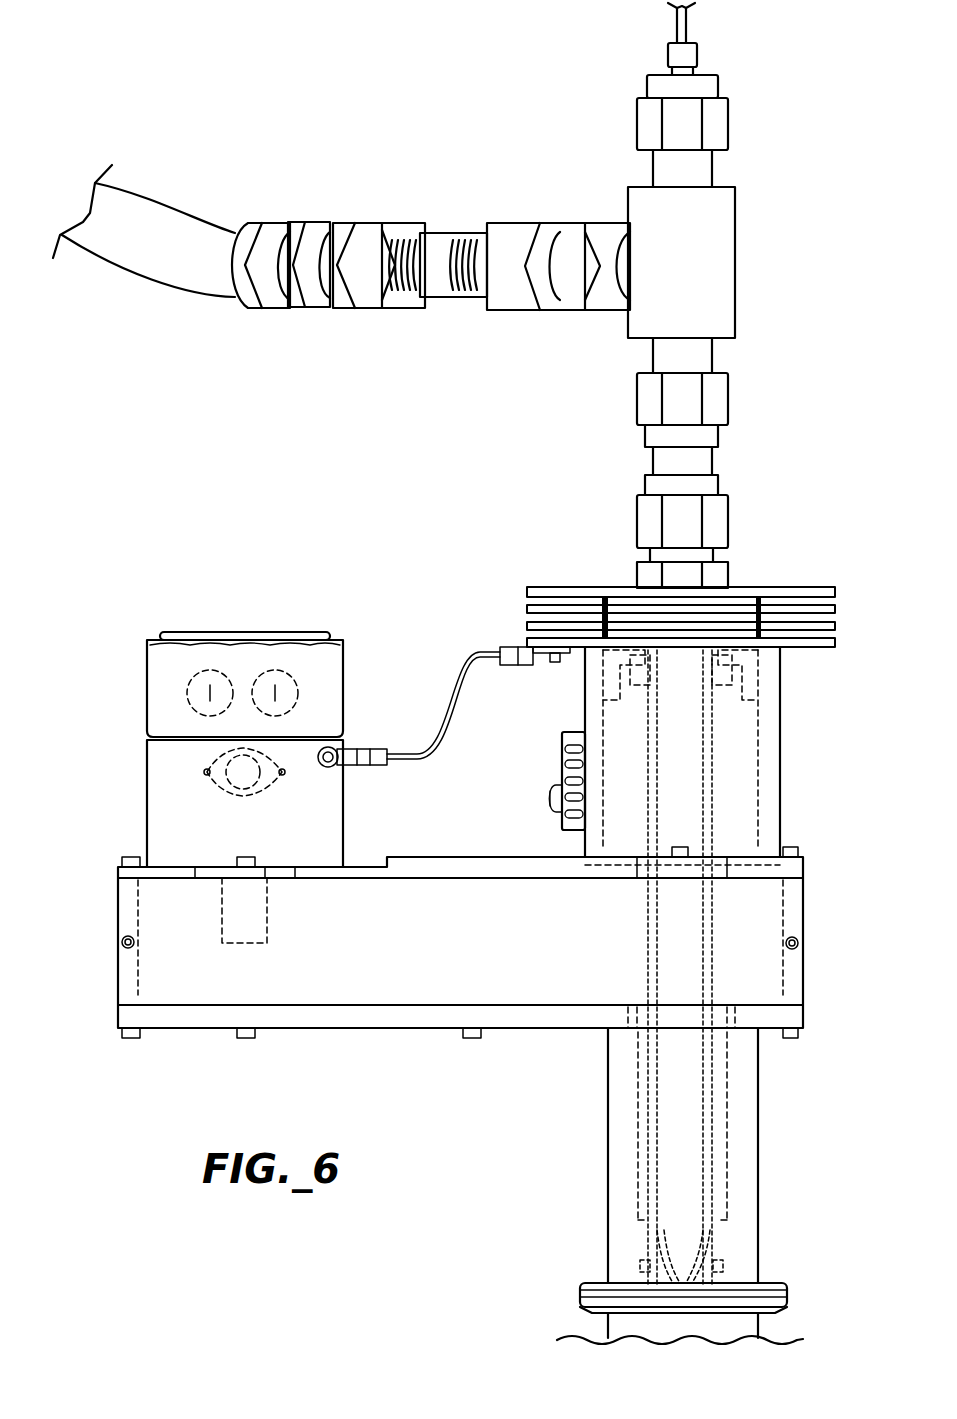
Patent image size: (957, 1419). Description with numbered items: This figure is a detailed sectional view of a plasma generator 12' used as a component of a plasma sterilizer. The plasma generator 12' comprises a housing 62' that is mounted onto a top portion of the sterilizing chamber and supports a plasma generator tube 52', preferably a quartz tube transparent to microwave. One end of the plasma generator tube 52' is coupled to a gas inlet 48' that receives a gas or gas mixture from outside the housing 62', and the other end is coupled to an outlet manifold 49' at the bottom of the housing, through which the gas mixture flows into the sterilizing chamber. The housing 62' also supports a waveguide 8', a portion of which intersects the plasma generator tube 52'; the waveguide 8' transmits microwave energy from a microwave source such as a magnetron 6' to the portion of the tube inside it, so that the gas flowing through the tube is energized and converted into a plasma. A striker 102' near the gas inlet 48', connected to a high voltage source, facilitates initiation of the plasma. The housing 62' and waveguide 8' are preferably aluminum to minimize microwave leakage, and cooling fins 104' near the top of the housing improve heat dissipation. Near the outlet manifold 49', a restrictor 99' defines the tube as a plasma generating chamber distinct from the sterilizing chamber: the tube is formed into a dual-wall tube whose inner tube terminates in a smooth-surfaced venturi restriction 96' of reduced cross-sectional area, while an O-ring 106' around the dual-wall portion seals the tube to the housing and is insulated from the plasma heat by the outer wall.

The striker 102' is at (730, 53).
The plasma generator 12' is at (709, 295).
The gas inlet 48' is at (644, 553).
The cooling fins 104' is at (637, 604).
The magnetron 6' is at (339, 724).
The housing 62' is at (700, 965).
The plasma generator tube 52' is at (777, 968).
The waveguide 8' is at (460, 970).
The venturi restriction 96' is at (732, 968).
The restrictor 99' is at (735, 1256).
The O-ring 106' is at (621, 1255).
The outlet manifold 49' is at (708, 1313).